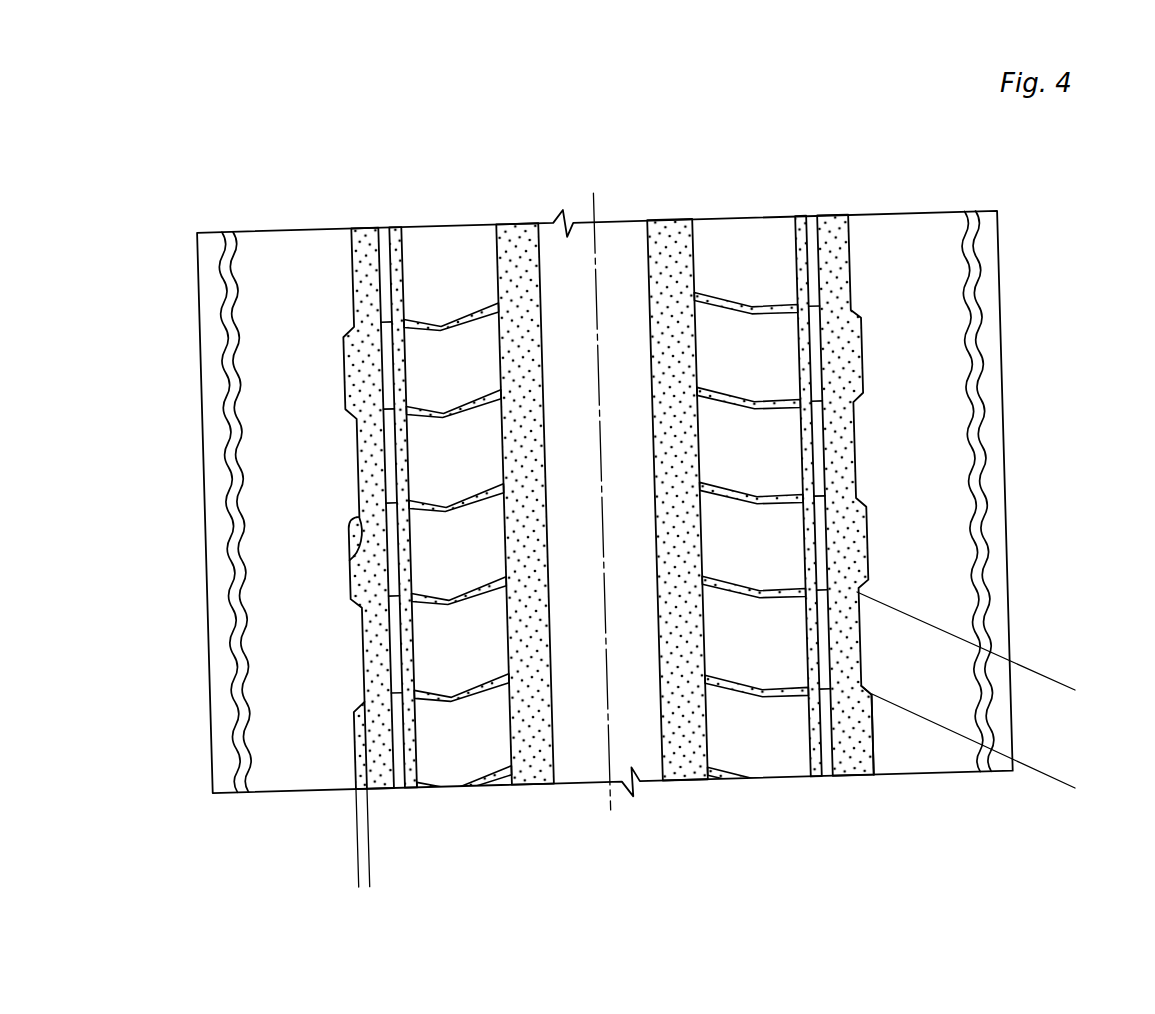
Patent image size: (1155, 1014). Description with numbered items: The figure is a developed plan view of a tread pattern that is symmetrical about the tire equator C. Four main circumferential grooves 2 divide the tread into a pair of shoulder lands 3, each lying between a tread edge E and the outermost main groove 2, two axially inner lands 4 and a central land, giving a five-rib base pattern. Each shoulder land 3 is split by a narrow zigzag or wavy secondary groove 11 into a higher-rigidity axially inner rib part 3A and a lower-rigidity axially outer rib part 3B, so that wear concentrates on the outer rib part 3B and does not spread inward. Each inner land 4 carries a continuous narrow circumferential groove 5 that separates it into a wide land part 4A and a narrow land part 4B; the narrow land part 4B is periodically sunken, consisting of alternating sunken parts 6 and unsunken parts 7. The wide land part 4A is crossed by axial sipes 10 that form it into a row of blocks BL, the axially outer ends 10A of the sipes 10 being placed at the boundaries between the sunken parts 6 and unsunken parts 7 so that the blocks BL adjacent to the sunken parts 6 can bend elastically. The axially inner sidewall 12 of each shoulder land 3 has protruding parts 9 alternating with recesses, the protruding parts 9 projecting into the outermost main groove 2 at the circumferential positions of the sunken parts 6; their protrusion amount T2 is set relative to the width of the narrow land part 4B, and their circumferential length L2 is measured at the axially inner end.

The main circumferential groove 2 is at (357, 226).
The shoulder land 3 is at (250, 865).
The axially inner rib part 3A is at (293, 776).
The axially outer rib part 3B is at (215, 760).
The axially inner land 4 is at (828, 100).
The axially inner wide land part 4A is at (742, 228).
The axially outer narrow land part 4B is at (810, 222).
The narrow circumferential groove 5 is at (392, 230).
The sunken part 6 is at (387, 278).
The unsunken part 7 is at (388, 367).
The protruding part 9 is at (351, 231).
The axial sipe 10 is at (483, 302).
The axially outer end of sipe 10A is at (405, 410).
The secondary groove 11 is at (427, 617).
The axially inner sidewall 12 is at (353, 520).
The block BL is at (425, 442).
The tire equator C is at (594, 194).
The tread edge E is at (197, 272).
The circumferential length of protruding part L2 is at (1065, 780).
The amount of protrusion T2 is at (369, 876).